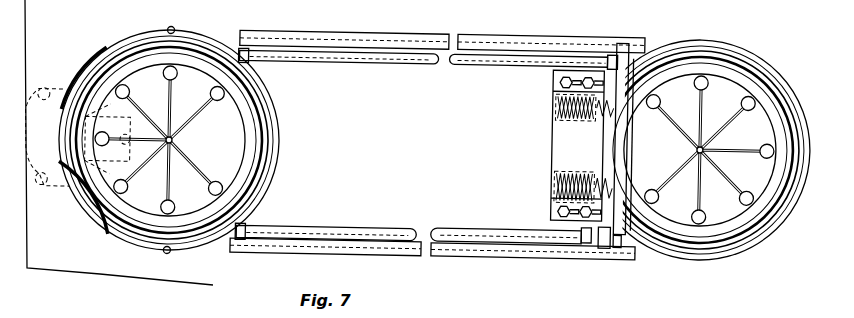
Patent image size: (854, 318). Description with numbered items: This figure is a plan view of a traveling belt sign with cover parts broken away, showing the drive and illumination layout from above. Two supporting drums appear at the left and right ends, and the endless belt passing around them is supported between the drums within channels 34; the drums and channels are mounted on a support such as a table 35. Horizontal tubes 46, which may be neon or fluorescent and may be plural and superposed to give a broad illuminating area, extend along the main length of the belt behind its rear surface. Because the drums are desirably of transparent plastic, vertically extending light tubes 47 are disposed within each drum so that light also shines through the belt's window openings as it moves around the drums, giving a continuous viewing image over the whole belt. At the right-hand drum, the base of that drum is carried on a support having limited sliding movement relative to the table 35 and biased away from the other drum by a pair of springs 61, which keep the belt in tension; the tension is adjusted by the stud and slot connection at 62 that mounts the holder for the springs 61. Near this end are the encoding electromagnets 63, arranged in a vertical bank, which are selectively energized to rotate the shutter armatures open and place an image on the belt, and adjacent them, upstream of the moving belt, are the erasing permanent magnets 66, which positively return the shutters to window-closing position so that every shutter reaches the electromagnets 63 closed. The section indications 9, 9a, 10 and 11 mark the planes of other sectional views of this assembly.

The section line 9- 9 is at (293, 113).
The section line 9a- 9a is at (682, 100).
The direction arrow 10 is at (626, 214).
The direction arrow 11 is at (614, 201).
The channels 34 is at (489, 250).
The table 35 is at (119, 142).
The horizontal tubes 46 is at (393, 56).
The vertically extending light tubes 47 is at (163, 76).
The springs 61 is at (575, 119).
The stud and slot connection 62 is at (541, 205).
The encoding electromagnets 63 is at (607, 235).
The erasing permanent magnets 66 is at (617, 239).